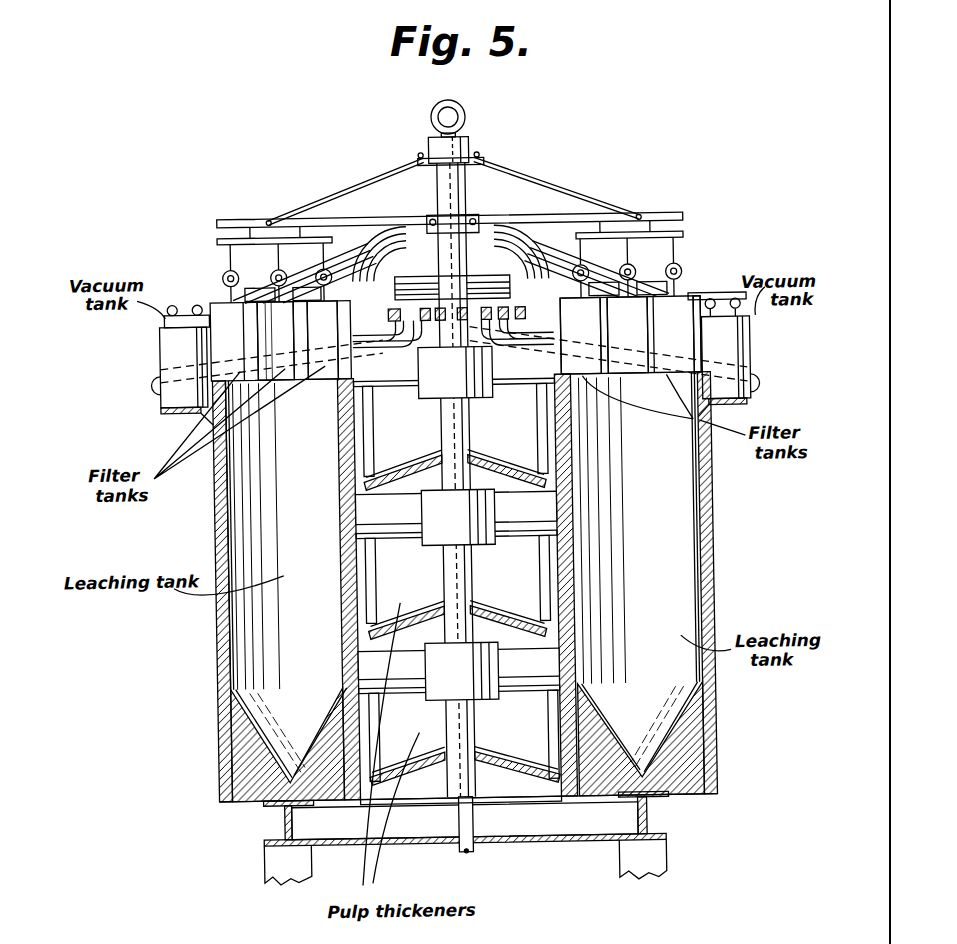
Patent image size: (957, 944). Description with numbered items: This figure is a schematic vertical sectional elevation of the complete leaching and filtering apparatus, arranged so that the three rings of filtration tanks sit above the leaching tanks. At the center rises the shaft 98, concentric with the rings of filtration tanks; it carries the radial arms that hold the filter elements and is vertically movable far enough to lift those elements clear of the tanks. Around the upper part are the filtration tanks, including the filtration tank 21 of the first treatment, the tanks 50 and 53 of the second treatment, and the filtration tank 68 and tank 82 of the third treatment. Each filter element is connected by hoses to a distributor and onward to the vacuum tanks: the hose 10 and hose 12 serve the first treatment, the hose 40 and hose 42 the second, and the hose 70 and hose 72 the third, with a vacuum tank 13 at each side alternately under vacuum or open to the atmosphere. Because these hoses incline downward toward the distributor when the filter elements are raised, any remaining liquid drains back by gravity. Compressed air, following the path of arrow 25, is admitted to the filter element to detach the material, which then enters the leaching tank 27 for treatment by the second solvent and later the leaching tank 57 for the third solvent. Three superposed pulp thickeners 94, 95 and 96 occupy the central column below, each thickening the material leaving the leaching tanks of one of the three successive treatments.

The hose 10 is at (368, 250).
The hose 12 is at (150, 393).
The vacuum tank 13 is at (174, 331).
The filtration tank 21 is at (222, 310).
The compressed air path 25 is at (670, 310).
The leaching tank 27 is at (671, 507).
The hose 40 is at (410, 247).
The hose 42 is at (410, 337).
The tank 50 is at (627, 335).
The tank 53 is at (270, 313).
The leaching tank 57 is at (238, 512).
The filtration tank 68 is at (330, 313).
The hose 70 is at (415, 243).
The hose 72 is at (411, 342).
The tank 82 is at (552, 313).
The pulp thickener 94 is at (558, 418).
The pulp thickener 95 is at (556, 558).
The pulp thickener 96 is at (566, 718).
The shaft 98 is at (458, 195).